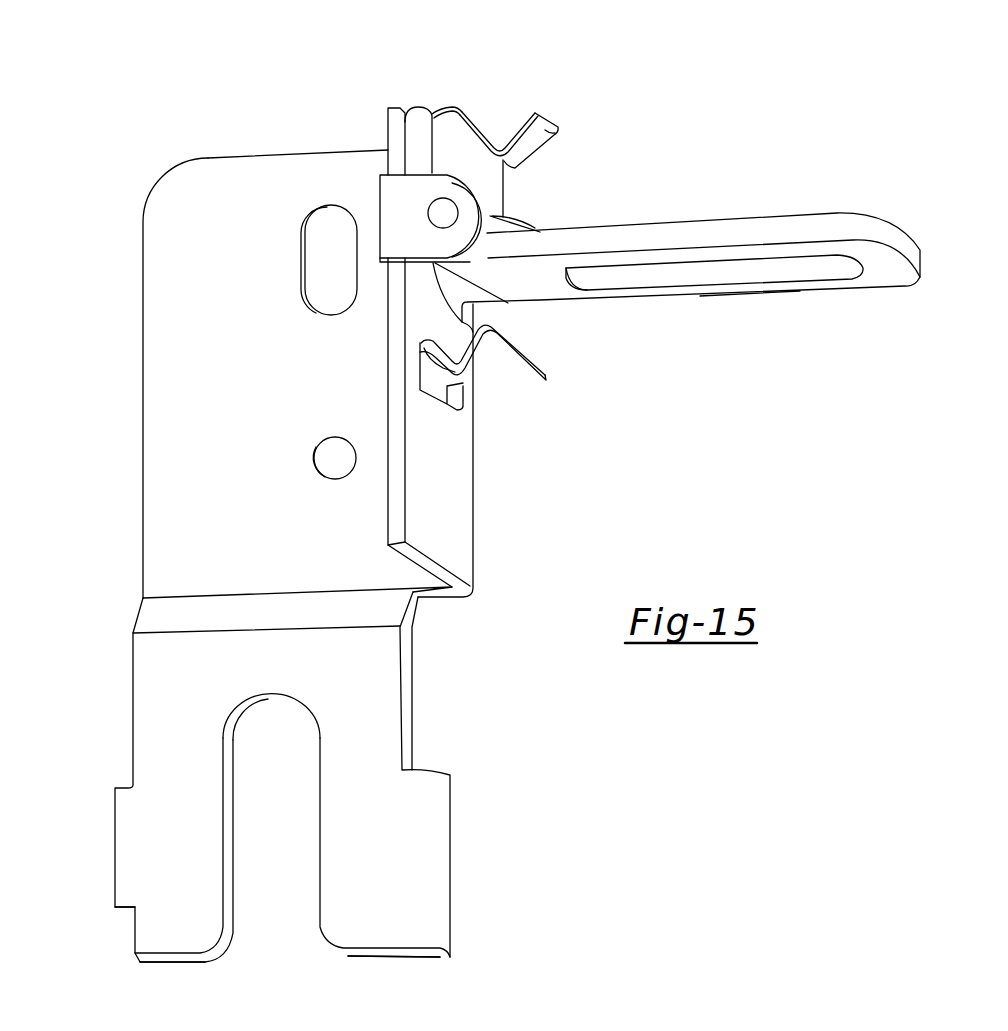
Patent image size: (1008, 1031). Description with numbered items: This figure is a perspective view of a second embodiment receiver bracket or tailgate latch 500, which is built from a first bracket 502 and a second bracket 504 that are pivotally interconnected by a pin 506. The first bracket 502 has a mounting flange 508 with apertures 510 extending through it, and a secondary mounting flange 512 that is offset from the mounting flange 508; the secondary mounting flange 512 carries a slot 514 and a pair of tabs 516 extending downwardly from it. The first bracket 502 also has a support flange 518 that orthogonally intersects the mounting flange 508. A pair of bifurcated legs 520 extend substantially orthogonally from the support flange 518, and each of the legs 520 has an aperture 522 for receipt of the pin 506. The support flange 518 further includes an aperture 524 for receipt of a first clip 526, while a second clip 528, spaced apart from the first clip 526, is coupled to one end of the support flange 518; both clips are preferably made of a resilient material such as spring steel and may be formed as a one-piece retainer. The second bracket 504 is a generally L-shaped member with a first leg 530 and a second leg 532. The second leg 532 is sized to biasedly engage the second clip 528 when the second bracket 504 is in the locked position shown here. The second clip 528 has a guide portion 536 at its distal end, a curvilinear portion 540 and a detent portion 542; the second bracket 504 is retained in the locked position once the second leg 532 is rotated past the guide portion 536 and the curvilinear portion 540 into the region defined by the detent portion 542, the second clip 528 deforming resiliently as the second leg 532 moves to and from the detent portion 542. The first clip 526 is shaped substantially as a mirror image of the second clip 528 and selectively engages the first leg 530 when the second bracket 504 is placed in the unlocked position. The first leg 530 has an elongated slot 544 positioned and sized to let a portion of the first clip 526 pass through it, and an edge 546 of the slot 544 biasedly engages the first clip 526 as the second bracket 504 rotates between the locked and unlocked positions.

The tailgate latch 500 is at (528, 742).
The first bracket 502 is at (214, 152).
The second bracket 504 is at (795, 300).
The pin 506 is at (441, 215).
The mounting flange 508 is at (163, 338).
The apertures 510 is at (308, 262).
The secondary mounting flange 512 is at (150, 693).
The slot 514 is at (230, 878).
The tabs 516 is at (120, 910).
The support flange 518 is at (420, 562).
The bifurcated legs 520 is at (400, 194).
The aperture 522 is at (468, 225).
The aperture 524 is at (453, 398).
The first clip 526 is at (533, 393).
The second clip 528 is at (546, 102).
The first leg 530 is at (807, 222).
The second leg 532 is at (423, 128).
The guide portion 536 is at (557, 130).
The curvilinear portion 540 is at (498, 150).
The detent portion 542 is at (438, 115).
The elongated slot 544 is at (733, 273).
The edge 546 is at (583, 271).